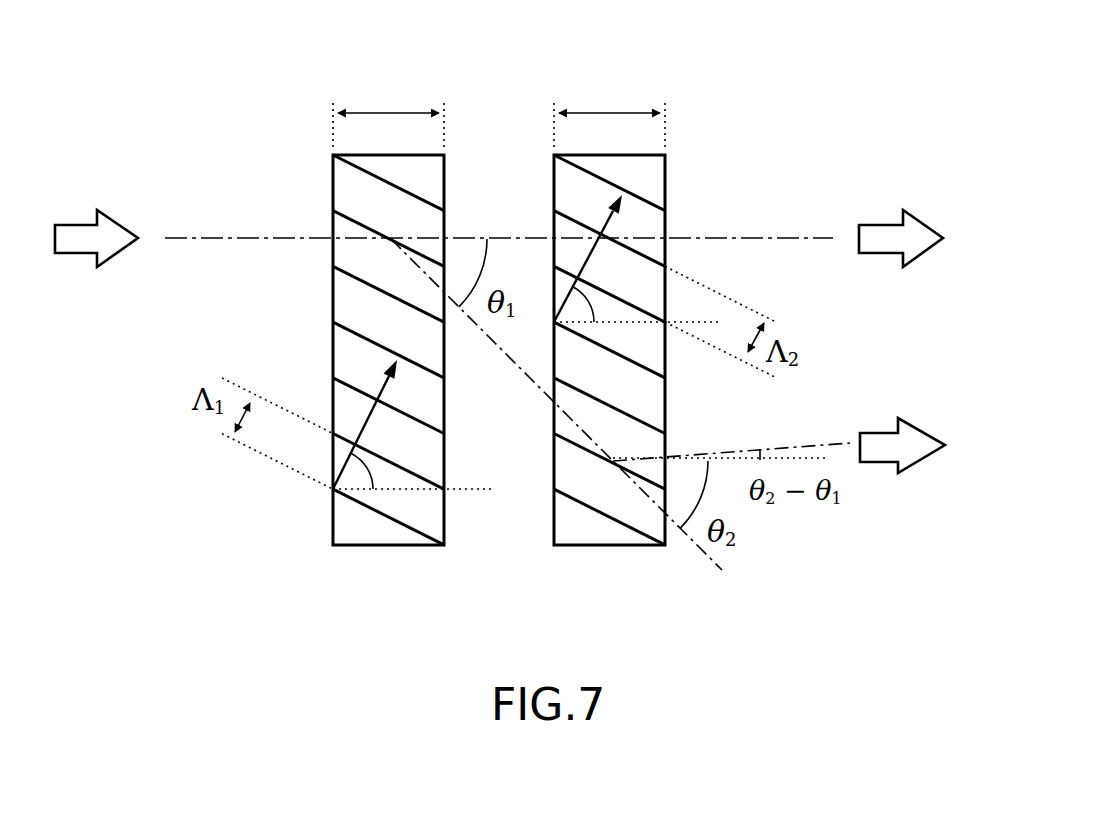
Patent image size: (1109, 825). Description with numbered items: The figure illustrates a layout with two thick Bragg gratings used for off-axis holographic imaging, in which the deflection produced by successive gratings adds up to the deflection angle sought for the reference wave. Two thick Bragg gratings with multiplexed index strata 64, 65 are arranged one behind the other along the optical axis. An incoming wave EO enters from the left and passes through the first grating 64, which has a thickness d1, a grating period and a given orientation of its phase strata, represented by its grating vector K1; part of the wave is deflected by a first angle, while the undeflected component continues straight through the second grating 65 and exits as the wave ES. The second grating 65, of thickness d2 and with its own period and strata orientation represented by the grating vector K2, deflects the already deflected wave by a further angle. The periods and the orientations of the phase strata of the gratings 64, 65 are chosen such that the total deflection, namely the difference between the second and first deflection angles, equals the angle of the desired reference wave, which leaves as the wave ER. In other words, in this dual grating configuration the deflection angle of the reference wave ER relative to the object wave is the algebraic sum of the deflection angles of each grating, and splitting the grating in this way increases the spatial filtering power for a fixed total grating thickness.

The thick Bragg grating with multiplexed index strata 64 is at (393, 555).
The thick Bragg grating with multiplexed index strata 65 is at (620, 555).
The input object beam EO is at (148, 210).
The output signal beam ES is at (787, 228).
The output reference beam ER is at (878, 480).
The thickness of first grating d1 is at (388, 109).
The thickness of second grating d2 is at (609, 109).
The grating vector of first grating K1 is at (412, 416).
The grating vector of second grating K2 is at (637, 250).